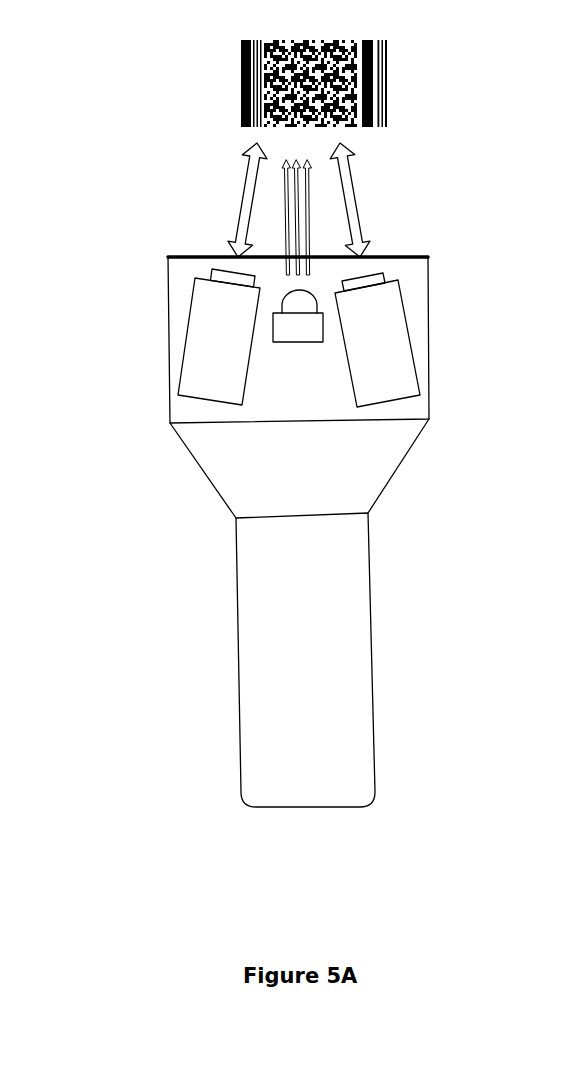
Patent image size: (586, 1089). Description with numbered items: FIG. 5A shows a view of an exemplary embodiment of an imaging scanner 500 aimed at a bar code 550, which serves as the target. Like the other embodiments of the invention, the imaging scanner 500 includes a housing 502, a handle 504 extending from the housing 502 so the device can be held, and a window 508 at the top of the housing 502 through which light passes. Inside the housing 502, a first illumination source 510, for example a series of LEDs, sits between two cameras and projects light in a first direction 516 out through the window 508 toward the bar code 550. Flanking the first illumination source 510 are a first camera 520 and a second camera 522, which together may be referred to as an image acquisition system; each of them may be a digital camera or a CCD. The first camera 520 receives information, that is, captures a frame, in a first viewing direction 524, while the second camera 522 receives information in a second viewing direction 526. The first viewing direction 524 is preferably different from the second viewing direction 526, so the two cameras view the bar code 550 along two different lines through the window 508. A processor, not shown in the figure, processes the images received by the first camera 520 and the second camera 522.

The imaging scanner 500 is at (125, 143).
The housing 502 is at (195, 461).
The handle 504 is at (242, 760).
The window 508 is at (403, 259).
The first illumination source 510 is at (297, 342).
The first direction 516 is at (310, 222).
The first camera 520 is at (186, 333).
The second camera 522 is at (410, 338).
The first viewing direction 524 is at (241, 219).
The second viewing direction 526 is at (350, 177).
The bar code 550 is at (385, 50).